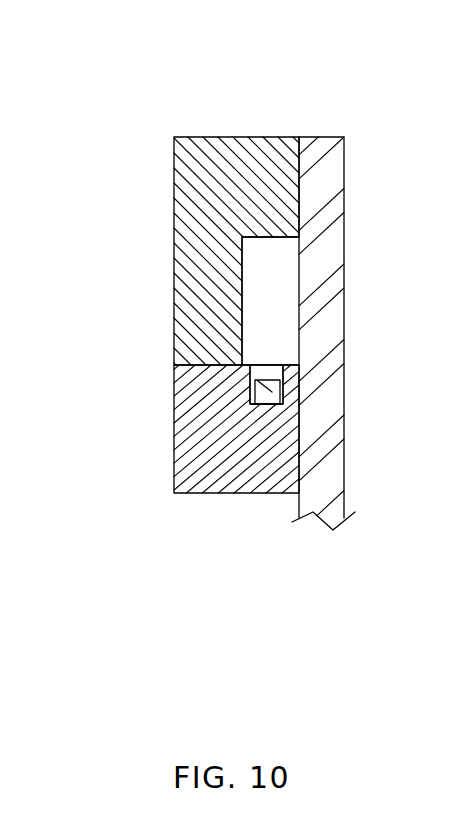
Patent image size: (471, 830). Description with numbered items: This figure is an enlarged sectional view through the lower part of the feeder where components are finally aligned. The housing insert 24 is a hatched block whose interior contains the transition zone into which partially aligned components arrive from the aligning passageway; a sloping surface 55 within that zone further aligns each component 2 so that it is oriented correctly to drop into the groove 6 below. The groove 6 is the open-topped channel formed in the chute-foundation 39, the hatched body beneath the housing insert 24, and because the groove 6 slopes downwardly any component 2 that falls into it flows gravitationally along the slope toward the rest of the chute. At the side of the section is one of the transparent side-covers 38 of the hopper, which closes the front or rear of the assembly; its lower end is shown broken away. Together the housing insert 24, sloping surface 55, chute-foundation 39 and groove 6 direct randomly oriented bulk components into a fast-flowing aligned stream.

The housing insert 24 is at (229, 203).
The side-covers for hopper 38 is at (328, 172).
The sloping surface 55 is at (297, 362).
The component 2 is at (250, 370).
The chute-foundation 39 is at (210, 475).
The groove 6 is at (270, 404).